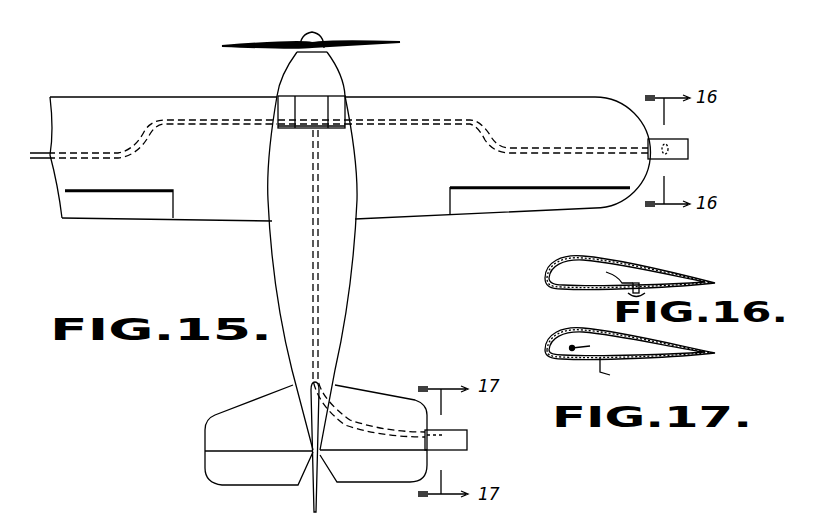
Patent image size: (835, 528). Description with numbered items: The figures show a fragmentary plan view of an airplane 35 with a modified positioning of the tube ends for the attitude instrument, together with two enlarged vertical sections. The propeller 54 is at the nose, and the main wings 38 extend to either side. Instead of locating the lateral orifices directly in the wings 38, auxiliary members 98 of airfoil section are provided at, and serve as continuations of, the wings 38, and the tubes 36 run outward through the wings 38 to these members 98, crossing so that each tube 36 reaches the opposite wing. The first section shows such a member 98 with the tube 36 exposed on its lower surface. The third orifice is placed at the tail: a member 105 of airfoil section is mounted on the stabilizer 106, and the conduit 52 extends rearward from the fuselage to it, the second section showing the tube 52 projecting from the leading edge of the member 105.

In FIG. 15, the airplane 35 is at (318, 238).
In FIG. 15, the tube 36 is at (118, 158).
In FIG. 16, the tube 36 is at (609, 272).
In FIG. 15, the wing 38 is at (350, 159).
In FIG. 15, the conduit 52 is at (320, 287).
In FIG. 17, the conduit 52 is at (590, 346).
In FIG. 15, the propeller 54 is at (262, 50).
In FIG. 15, the auxiliary member 98 is at (689, 151).
In FIG. 16, the auxiliary member 98 is at (625, 258).
In FIG. 15, the member 105 is at (468, 443).
In FIG. 17, the member 105 is at (622, 372).
In FIG. 15, the stabilizer 106 is at (316, 435).